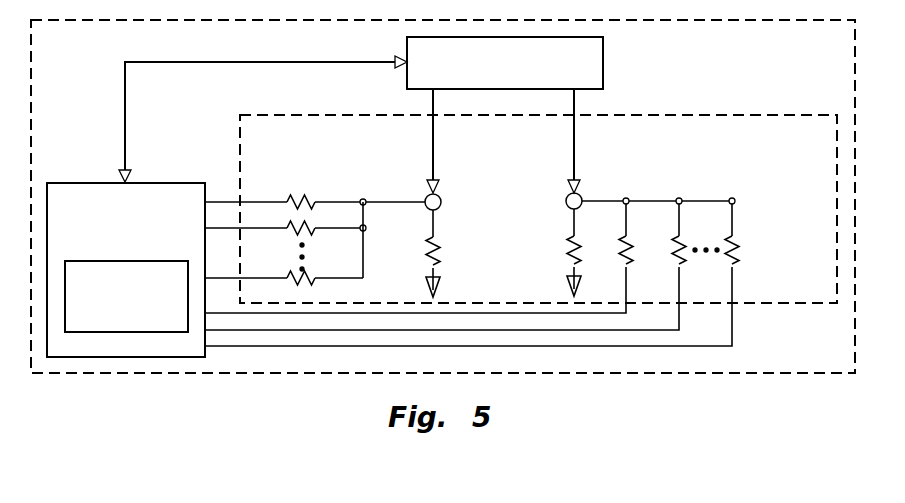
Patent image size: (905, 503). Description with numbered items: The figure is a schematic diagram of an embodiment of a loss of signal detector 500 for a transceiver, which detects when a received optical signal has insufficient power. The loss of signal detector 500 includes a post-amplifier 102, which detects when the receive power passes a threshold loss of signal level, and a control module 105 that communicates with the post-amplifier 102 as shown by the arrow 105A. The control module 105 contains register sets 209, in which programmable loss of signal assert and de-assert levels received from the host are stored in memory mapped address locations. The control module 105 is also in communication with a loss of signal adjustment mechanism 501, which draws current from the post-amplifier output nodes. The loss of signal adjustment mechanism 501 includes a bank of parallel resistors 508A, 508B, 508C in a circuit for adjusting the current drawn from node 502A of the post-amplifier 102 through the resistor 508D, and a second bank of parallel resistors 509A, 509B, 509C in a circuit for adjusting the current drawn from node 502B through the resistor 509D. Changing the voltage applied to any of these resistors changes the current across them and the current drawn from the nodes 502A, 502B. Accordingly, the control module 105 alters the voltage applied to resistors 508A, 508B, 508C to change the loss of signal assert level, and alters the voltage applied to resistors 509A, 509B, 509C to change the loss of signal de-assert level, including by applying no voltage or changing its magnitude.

The loss of signal detector 500 is at (443, 196).
The loss of signal adjustment mechanism 501 is at (538, 209).
The post-amplifier 102 is at (505, 63).
The control module 105 is at (126, 270).
The arrow 105A is at (207, 62).
The register sets 209 is at (126, 296).
The node 502A is at (420, 92).
The node 502B is at (588, 92).
The resistor 508A is at (300, 196).
The resistor 508B is at (292, 236).
The resistor 508C is at (306, 285).
The resistor 508D is at (442, 248).
The resistor 509A is at (632, 264).
The resistor 509B is at (687, 264).
The resistor 509C is at (741, 251).
The resistor 509D is at (565, 258).